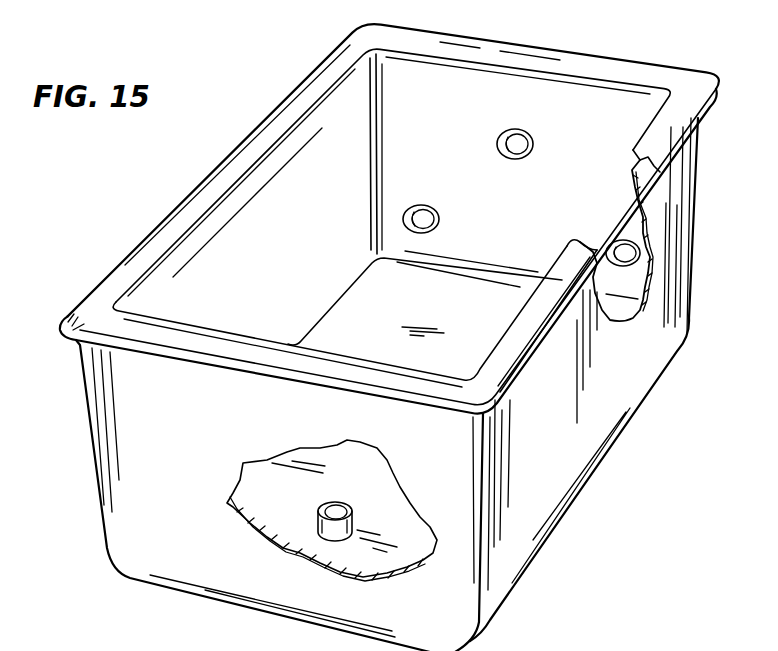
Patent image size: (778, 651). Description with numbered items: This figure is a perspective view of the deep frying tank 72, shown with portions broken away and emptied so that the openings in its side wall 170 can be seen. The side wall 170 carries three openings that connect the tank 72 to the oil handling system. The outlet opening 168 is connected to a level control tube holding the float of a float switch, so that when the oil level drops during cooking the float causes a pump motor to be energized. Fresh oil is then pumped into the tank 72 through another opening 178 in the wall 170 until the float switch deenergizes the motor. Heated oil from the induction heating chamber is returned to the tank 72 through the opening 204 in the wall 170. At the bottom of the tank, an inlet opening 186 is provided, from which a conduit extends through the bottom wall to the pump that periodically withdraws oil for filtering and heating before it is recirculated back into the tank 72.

The deep frying tank 72 is at (620, 61).
The side wall 170 is at (582, 210).
The outlet opening 168 is at (428, 214).
The opening 204 is at (522, 135).
The opening 178 is at (632, 260).
The inlet opening 186 is at (318, 528).